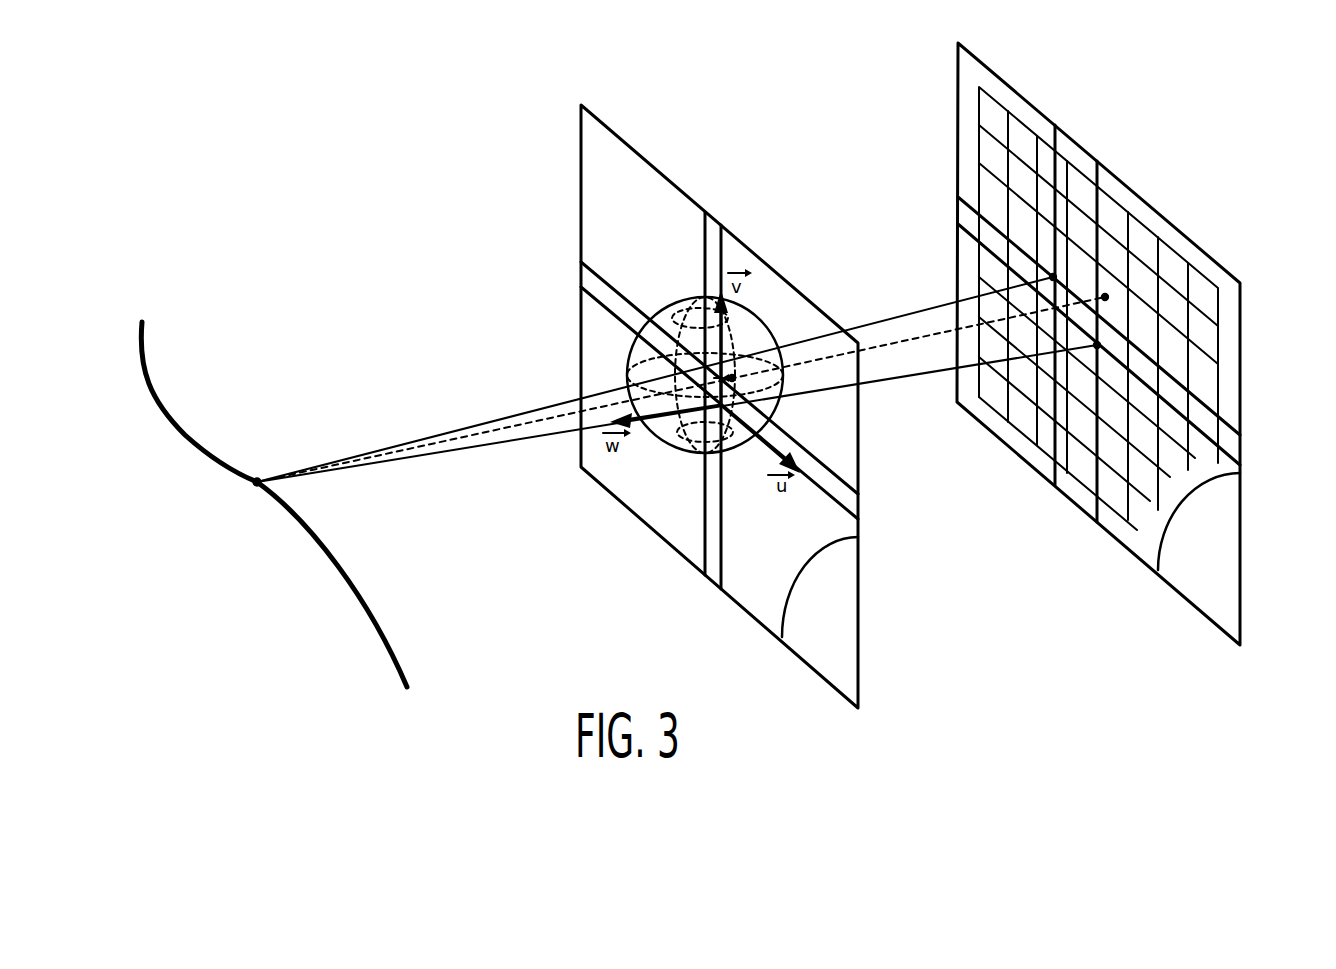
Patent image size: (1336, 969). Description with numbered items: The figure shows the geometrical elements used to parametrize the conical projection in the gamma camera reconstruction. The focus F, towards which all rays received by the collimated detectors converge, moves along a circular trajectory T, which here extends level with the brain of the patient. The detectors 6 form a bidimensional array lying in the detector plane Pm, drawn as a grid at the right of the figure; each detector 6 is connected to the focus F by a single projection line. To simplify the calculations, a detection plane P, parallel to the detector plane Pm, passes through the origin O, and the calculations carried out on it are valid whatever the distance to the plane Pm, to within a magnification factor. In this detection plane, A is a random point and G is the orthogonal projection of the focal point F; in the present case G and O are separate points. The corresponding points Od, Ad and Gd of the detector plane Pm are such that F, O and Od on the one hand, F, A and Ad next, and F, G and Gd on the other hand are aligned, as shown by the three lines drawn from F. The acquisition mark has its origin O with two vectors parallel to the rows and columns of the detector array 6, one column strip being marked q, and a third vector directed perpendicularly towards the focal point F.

The detector 6 is at (1172, 260).
The trajectory T is at (357, 582).
The focus F is at (259, 468).
The plane P is at (730, 394).
The column strip of detector plane q is at (712, 389).
The orthogonal projection of the focal point G is at (762, 425).
The origin O is at (688, 345).
The random point of the detection plane A is at (737, 368).
The detector plane Pm is at (1131, 344).
The point of the plane of the detectors Od is at (1072, 270).
The point of the plane of the detectors Ad is at (1120, 298).
The point of the plane of the detectors Gd is at (1109, 363).